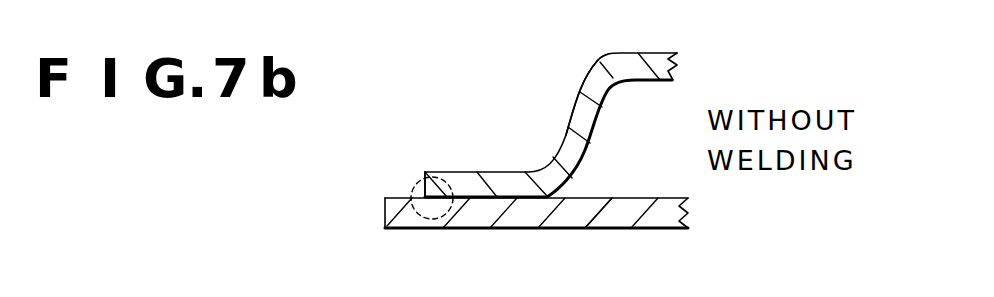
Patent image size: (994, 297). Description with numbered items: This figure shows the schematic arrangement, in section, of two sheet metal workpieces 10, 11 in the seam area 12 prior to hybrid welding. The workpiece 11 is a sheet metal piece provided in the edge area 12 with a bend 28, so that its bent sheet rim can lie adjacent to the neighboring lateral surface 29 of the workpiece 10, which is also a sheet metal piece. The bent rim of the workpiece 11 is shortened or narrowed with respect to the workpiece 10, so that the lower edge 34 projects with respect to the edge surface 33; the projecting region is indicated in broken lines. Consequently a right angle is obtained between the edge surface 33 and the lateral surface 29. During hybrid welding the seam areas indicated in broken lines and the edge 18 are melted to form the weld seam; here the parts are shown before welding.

The workpiece 10 is at (690, 216).
The workpiece 11 is at (677, 65).
The seam area 12 is at (413, 165).
The edge 18 is at (437, 173).
The bend 28 is at (545, 105).
The lateral surface 29 is at (623, 207).
The edge surface 33 is at (425, 178).
The lower edge 34 is at (393, 213).